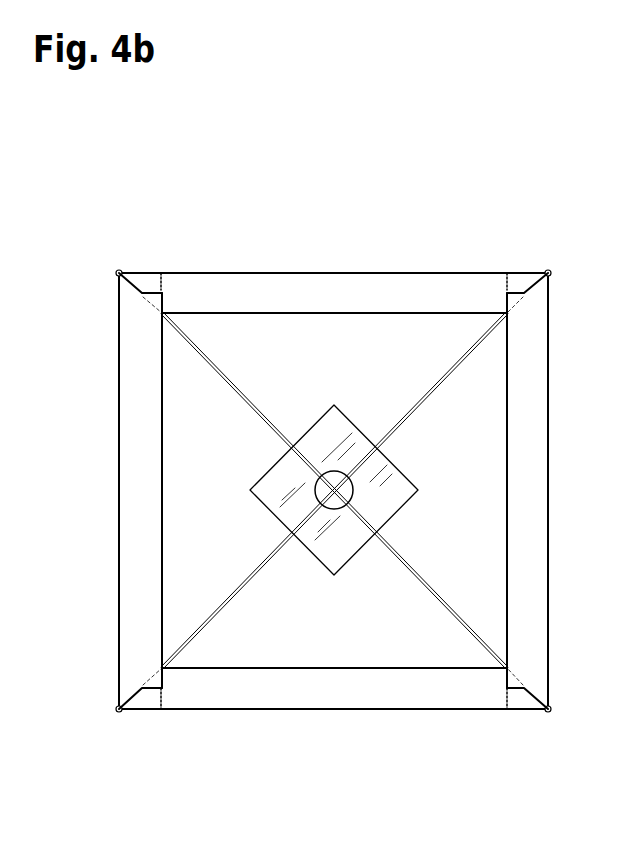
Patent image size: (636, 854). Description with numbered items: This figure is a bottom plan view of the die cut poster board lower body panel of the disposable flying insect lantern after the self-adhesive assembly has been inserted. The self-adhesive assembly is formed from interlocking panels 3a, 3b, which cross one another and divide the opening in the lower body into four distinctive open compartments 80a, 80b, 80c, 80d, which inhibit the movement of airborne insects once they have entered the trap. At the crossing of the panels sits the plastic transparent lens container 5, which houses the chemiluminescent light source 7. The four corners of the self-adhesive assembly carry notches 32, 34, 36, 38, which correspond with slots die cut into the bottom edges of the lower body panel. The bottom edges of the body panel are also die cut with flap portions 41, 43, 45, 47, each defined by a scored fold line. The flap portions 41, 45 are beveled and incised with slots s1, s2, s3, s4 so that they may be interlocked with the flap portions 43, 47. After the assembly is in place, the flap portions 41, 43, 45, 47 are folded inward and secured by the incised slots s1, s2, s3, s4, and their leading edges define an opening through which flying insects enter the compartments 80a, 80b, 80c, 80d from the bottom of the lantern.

The notch 32 is at (116, 270).
The notch 34 is at (551, 712).
The notch 36 is at (116, 712).
The notch 38 is at (551, 270).
The incised slot s1 is at (142, 292).
The incised slot s2 is at (522, 292).
The incised slot s3 is at (518, 688).
The incised slot s4 is at (143, 688).
The flap portion 41 is at (329, 297).
The flap portion 43 is at (518, 473).
The flap portion 45 is at (326, 688).
The flap portion 47 is at (138, 495).
The interlocking panel 3a is at (450, 378).
The interlocking panel 3b is at (440, 605).
The plastic transparent lens container 5 is at (320, 533).
The chemiluminescent light source 7 is at (345, 490).
The open compartment 80a is at (360, 376).
The open compartment 80b is at (492, 504).
The open compartment 80c is at (357, 631).
The open compartment 80d is at (233, 502).